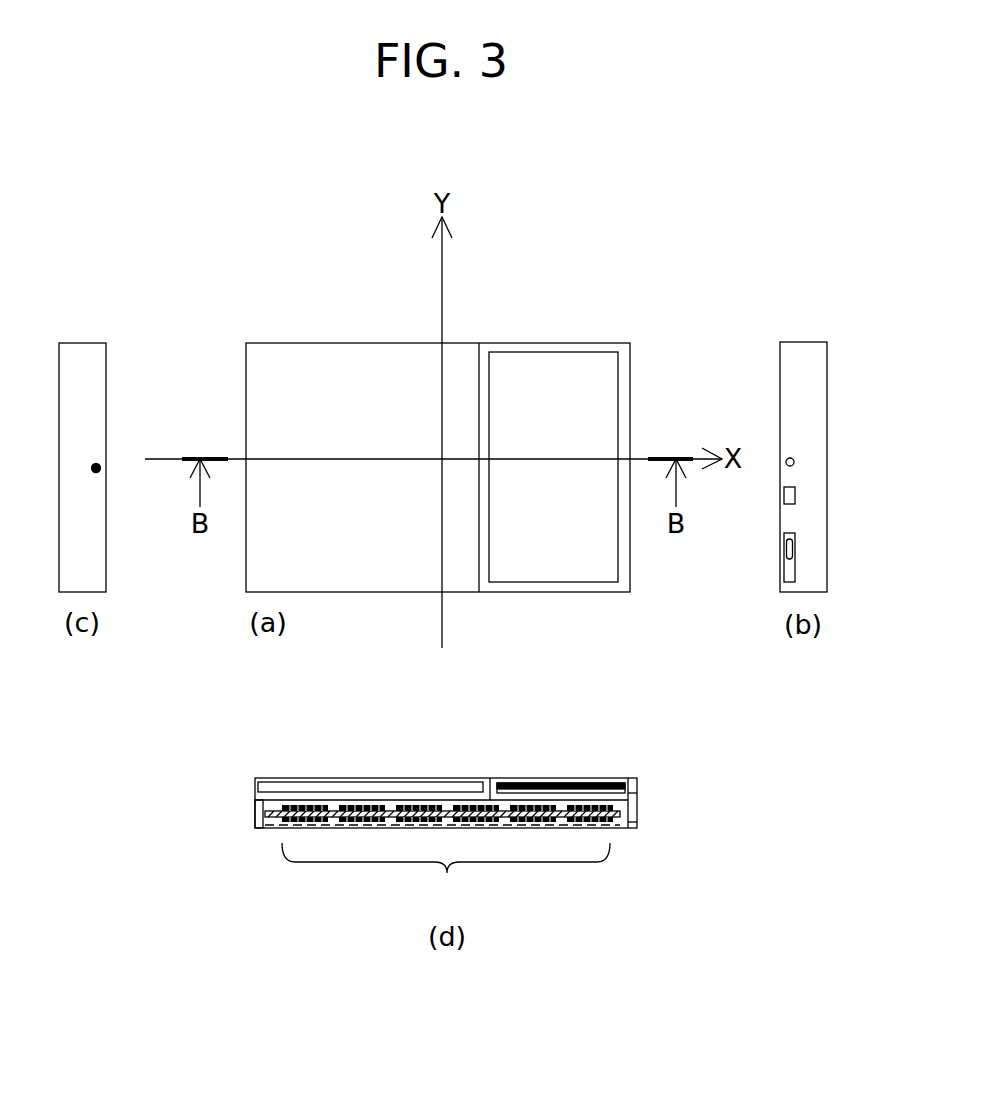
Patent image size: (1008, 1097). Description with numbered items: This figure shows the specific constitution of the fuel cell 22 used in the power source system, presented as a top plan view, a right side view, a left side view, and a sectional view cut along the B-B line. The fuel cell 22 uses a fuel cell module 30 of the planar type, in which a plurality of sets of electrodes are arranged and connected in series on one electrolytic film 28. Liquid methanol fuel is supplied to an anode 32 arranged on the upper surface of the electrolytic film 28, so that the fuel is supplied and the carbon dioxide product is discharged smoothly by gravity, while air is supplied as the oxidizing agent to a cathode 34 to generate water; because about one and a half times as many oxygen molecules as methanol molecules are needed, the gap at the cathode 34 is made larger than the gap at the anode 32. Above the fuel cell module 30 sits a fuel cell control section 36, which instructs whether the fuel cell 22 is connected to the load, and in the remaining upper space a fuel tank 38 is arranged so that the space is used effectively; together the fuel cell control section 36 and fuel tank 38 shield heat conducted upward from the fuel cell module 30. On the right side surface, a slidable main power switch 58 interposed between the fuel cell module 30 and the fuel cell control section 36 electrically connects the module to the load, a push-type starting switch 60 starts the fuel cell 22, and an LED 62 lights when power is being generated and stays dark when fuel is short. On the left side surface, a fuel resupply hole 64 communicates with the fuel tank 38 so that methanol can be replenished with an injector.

The fuel cell 22 is at (627, 315).
The electrolytic film 28 is at (625, 812).
The fuel cell module 30 is at (446, 874).
The anode 32 is at (608, 803).
The cathode 34 is at (614, 821).
The fuel cell control section 36 is at (517, 362).
The fuel tank 38 is at (369, 362).
The main power switch 58 is at (788, 545).
The starting switch 60 is at (784, 495).
The LED 62 is at (790, 457).
The fuel resupply hole 64 is at (96, 472).